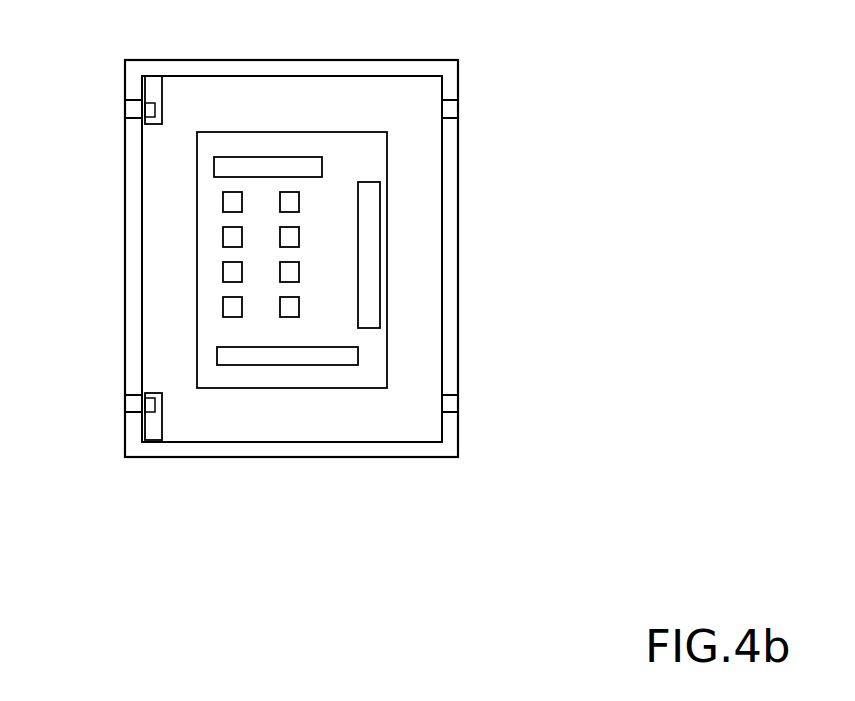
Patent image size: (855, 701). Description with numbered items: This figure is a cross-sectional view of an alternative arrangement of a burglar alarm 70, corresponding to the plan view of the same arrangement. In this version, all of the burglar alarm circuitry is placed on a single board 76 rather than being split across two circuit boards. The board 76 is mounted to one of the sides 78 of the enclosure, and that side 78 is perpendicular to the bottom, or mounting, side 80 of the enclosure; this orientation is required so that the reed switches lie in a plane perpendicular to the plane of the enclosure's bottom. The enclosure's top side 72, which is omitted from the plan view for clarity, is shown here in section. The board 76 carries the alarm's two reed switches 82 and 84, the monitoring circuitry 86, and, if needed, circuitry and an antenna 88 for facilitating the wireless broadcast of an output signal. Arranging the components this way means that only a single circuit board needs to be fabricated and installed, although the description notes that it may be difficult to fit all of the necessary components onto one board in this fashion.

The burglar alarm 70 is at (508, 488).
The top side 72 is at (130, 232).
The board 76 is at (243, 413).
The side 78 is at (410, 113).
The bottom side 80 is at (458, 169).
The reed switch 82 is at (333, 358).
The reed switch 84 is at (367, 288).
The monitoring circuitry 86 is at (218, 331).
The antenna 88 is at (227, 167).